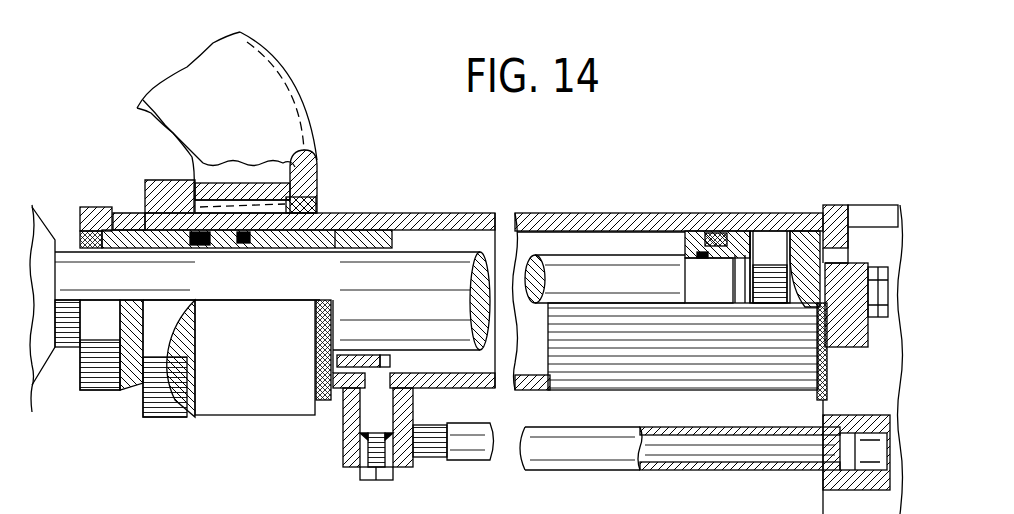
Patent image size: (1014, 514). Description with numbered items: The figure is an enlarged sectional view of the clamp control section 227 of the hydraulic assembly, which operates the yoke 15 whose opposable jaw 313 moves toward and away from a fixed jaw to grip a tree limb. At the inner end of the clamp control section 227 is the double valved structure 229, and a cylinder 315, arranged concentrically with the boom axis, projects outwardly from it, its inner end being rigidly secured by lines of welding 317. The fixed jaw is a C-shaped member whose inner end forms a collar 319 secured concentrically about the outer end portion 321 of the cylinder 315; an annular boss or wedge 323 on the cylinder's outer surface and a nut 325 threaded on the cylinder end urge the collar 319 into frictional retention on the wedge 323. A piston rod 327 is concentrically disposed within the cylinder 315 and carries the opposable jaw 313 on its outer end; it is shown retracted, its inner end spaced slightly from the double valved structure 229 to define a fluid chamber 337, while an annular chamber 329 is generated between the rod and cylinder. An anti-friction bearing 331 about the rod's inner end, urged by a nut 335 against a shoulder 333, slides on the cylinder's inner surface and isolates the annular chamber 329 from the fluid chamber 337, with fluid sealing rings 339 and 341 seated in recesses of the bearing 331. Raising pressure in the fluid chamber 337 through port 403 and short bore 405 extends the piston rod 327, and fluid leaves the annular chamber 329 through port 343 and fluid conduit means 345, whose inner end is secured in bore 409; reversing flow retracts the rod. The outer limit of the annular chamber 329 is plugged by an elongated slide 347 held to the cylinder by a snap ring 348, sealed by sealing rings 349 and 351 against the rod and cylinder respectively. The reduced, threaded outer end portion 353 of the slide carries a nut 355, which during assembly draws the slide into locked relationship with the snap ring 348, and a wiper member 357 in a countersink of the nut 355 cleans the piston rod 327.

The yoke 15 is at (268, 60).
The clamp control section 227 is at (543, 190).
The double valved structure 229 is at (872, 207).
The opposable jaw 313 is at (50, 323).
The cylinder 315 is at (623, 217).
The lines of welding 317 is at (822, 218).
The collar 319 is at (227, 403).
The outer end portion 321 is at (300, 153).
The annular boss or wedge 323 is at (327, 194).
The nut 325 is at (157, 197).
The piston rod 327 is at (572, 253).
The annular chamber 329 is at (598, 238).
The anti-friction bearing 331 is at (692, 230).
The shoulder 333 is at (685, 260).
The nut 335 is at (768, 242).
The fluid chamber 337 is at (803, 247).
The fluid sealing ring 339 is at (700, 258).
The fluid sealing ring 341 is at (718, 233).
The port 343 is at (373, 380).
The fluid conduit means 345 is at (465, 462).
The elongated slide 347 is at (365, 236).
The snap ring 348 is at (150, 210).
The sealing ring 349 is at (195, 248).
The sealing ring 351 is at (243, 248).
The outer end portion 353 is at (125, 228).
The nut 355 is at (97, 390).
The wiper member 357 is at (80, 240).
The port 403 is at (838, 297).
The short bore 405 is at (855, 311).
The bore 409 is at (825, 485).